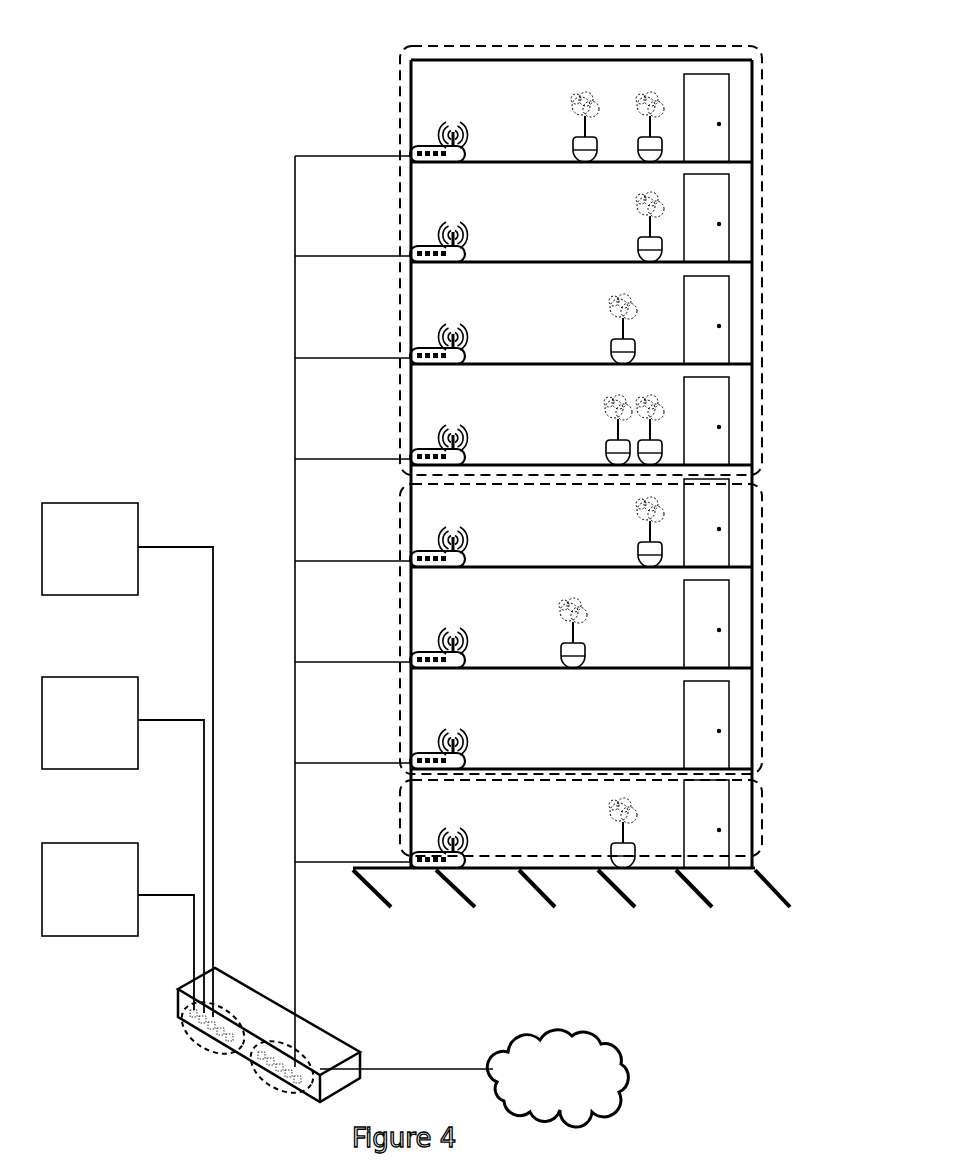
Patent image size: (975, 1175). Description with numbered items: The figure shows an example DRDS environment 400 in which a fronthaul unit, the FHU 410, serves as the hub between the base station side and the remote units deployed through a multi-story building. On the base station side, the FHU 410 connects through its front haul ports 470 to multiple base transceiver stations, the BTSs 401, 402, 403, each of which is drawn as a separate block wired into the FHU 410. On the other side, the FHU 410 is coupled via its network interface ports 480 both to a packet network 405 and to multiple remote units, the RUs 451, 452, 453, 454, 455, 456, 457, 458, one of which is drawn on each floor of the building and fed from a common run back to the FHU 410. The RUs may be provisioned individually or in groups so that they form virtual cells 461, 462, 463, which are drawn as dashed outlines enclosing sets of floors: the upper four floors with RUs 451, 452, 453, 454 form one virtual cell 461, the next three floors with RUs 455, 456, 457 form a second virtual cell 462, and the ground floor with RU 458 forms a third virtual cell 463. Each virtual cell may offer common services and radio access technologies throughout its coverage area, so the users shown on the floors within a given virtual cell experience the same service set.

The DRDS environment 400 is at (106, 44).
The BTS 401 is at (118, 926).
The BTS 402 is at (123, 845).
The BTS 403 is at (127, 760).
The packet network 405 is at (557, 1078).
The FHU 410 is at (314, 1023).
The RU 451 is at (466, 150).
The RU 452 is at (466, 250).
The RU 453 is at (466, 352).
The RU 454 is at (466, 453).
The RU 455 is at (466, 555).
The RU 456 is at (466, 656).
The access point / remote unit 457 is at (466, 757).
The RU 458 is at (466, 856).
The virtual cell 461 is at (762, 88).
The virtual cell 462 is at (762, 514).
The virtual cell 463 is at (762, 812).
The front haul ports 470 is at (184, 1042).
The network interface ports 480 is at (256, 1080).